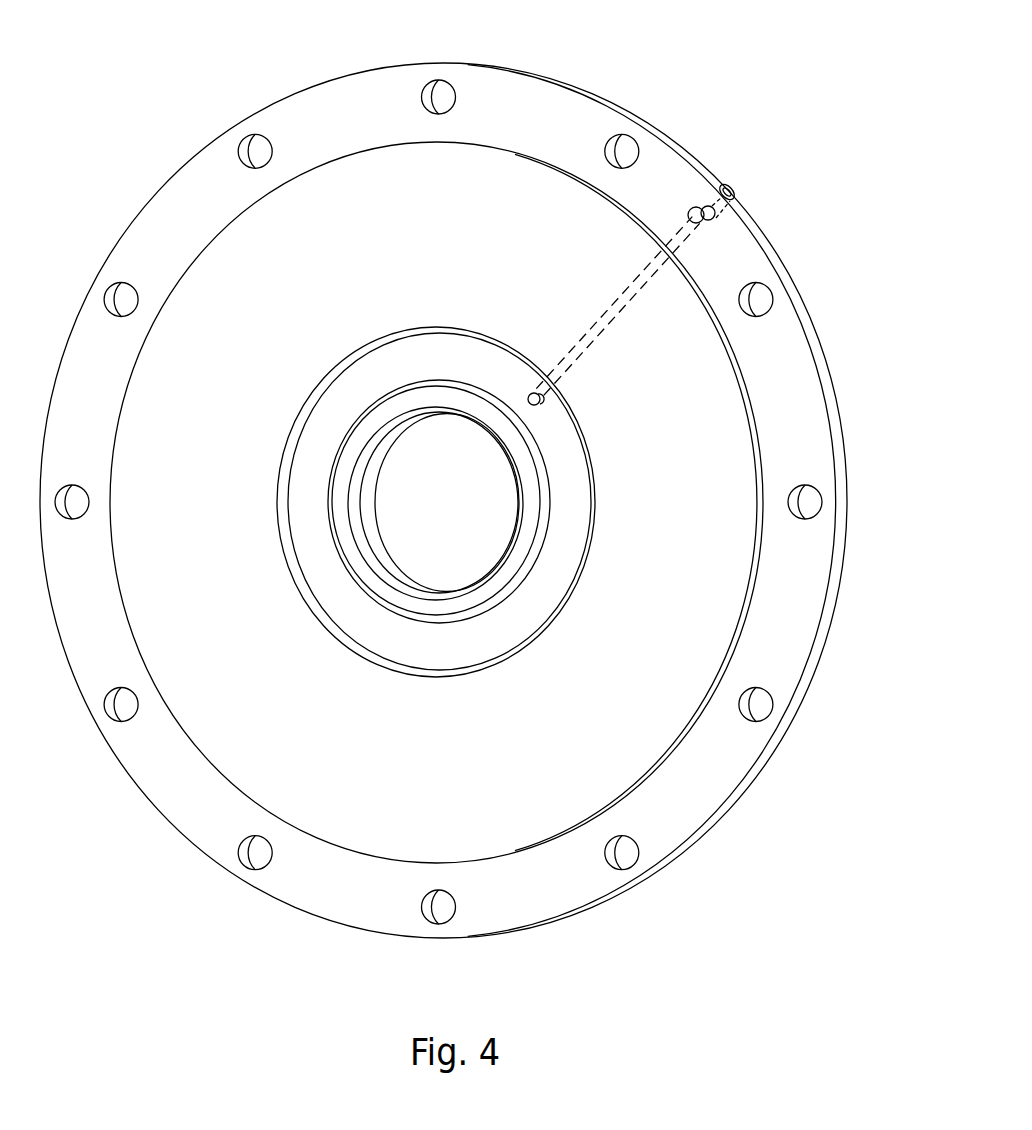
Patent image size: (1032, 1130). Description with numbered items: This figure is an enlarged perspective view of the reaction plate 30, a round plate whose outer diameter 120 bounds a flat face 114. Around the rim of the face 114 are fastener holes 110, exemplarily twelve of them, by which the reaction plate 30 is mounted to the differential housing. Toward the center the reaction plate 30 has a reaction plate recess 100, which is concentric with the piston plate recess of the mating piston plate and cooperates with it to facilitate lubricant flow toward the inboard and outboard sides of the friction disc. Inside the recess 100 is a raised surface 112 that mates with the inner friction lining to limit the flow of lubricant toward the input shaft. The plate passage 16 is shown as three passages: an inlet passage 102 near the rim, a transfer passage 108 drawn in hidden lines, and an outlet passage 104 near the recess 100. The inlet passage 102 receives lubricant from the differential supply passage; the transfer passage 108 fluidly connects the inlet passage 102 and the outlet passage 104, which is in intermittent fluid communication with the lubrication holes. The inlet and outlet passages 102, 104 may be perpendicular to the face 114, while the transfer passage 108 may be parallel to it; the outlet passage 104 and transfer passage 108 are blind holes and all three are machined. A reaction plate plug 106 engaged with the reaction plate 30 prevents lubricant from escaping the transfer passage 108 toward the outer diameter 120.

The reaction plate 30 is at (578, 88).
The reaction plate recess 100 is at (355, 388).
The inlet passage 102 is at (698, 206).
The outlet passage 104 is at (532, 392).
The reaction plate plug 106 is at (735, 196).
The transfer passage 108 is at (620, 297).
The fastener holes 110 is at (758, 316).
The raised surface 112 is at (532, 525).
The face 114 is at (647, 700).
The outer diameter 120 is at (776, 243).
The plate passage 16 is at (614, 331).